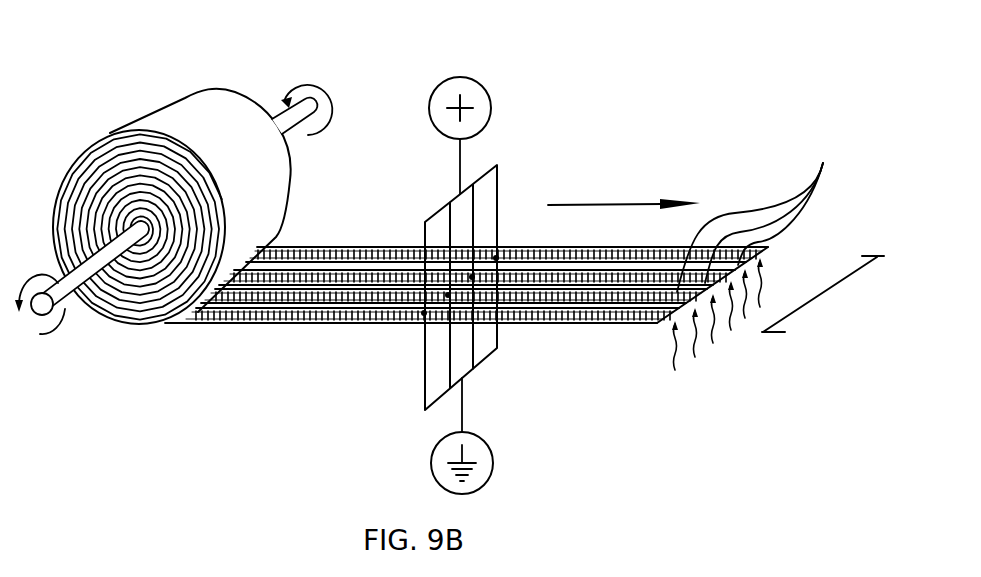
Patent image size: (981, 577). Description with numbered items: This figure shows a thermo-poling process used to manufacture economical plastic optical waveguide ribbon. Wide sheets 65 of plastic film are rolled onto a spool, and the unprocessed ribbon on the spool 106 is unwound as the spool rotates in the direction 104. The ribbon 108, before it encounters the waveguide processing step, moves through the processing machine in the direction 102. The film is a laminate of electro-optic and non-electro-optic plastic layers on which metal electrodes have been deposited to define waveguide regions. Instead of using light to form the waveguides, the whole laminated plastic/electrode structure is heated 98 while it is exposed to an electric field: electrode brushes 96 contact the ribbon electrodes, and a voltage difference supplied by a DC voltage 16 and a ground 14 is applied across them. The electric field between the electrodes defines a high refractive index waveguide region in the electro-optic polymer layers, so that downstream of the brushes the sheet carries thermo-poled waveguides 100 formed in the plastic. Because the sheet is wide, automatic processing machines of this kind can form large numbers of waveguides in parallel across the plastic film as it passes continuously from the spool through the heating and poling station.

The unprocessed ribbon on the spool 106 is at (173, 118).
The direction ribbon on spool rotates 104 is at (291, 82).
The ribbon before it encounters the waveguide processing step 108 is at (332, 305).
The electrode brushes 96 is at (496, 258).
The DC voltage 16 is at (424, 108).
The ground 14 is at (422, 462).
The direction ribbon moves through processing machine 102 is at (633, 195).
The thermo-poled waveguides formed in the plastic sheet 100 is at (762, 216).
The heat 98 is at (668, 337).
The wide sheets of plastic 65 is at (775, 347).